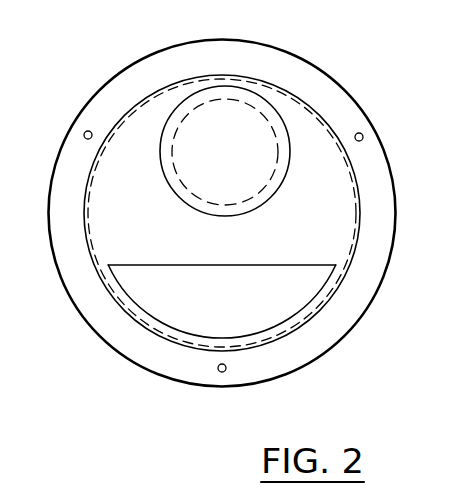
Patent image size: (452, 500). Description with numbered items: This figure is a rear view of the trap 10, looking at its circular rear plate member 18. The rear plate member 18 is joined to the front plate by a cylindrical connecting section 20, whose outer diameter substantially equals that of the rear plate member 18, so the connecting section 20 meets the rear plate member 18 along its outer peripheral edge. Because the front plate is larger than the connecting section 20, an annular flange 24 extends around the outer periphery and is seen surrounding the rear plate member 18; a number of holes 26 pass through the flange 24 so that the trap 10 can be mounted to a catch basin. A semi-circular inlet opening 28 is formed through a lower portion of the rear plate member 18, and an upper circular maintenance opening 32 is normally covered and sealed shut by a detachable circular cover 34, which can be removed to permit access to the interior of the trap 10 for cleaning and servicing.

The trap 10 is at (345, 62).
The rear plate member 18 is at (336, 193).
The cylindrical connecting section 20 is at (141, 330).
The annular flange 24 is at (359, 108).
The holes 26 is at (85, 132).
The inlet opening 28 is at (316, 277).
The maintenance opening 32 is at (247, 123).
The circular cover 34 is at (187, 103).